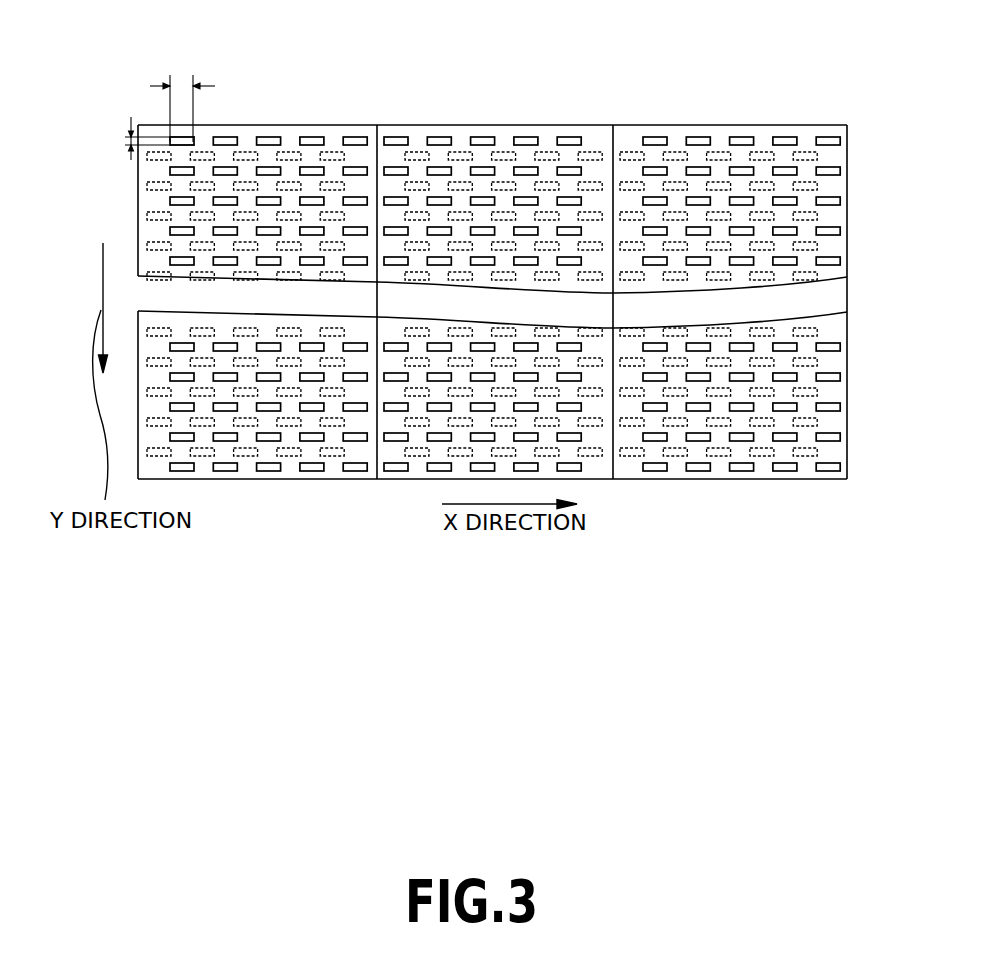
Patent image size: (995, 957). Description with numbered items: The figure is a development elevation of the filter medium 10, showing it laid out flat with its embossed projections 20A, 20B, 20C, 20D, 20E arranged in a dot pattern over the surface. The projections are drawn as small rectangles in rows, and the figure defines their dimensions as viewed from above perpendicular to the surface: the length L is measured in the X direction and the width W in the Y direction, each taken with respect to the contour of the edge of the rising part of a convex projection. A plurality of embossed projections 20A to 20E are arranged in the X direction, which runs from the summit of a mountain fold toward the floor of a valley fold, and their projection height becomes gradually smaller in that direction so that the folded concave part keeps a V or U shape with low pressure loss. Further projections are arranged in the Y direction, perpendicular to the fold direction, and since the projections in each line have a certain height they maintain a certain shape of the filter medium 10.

The filter medium 10 is at (709, 92).
The embossed projection 20A is at (395, 137).
The embossed projection 20B is at (440, 137).
The embossed projection 20C is at (483, 137).
The embossed projection 20D is at (528, 137).
The embossed projection 20E is at (573, 137).
The length L is at (182, 97).
The width W is at (149, 138).